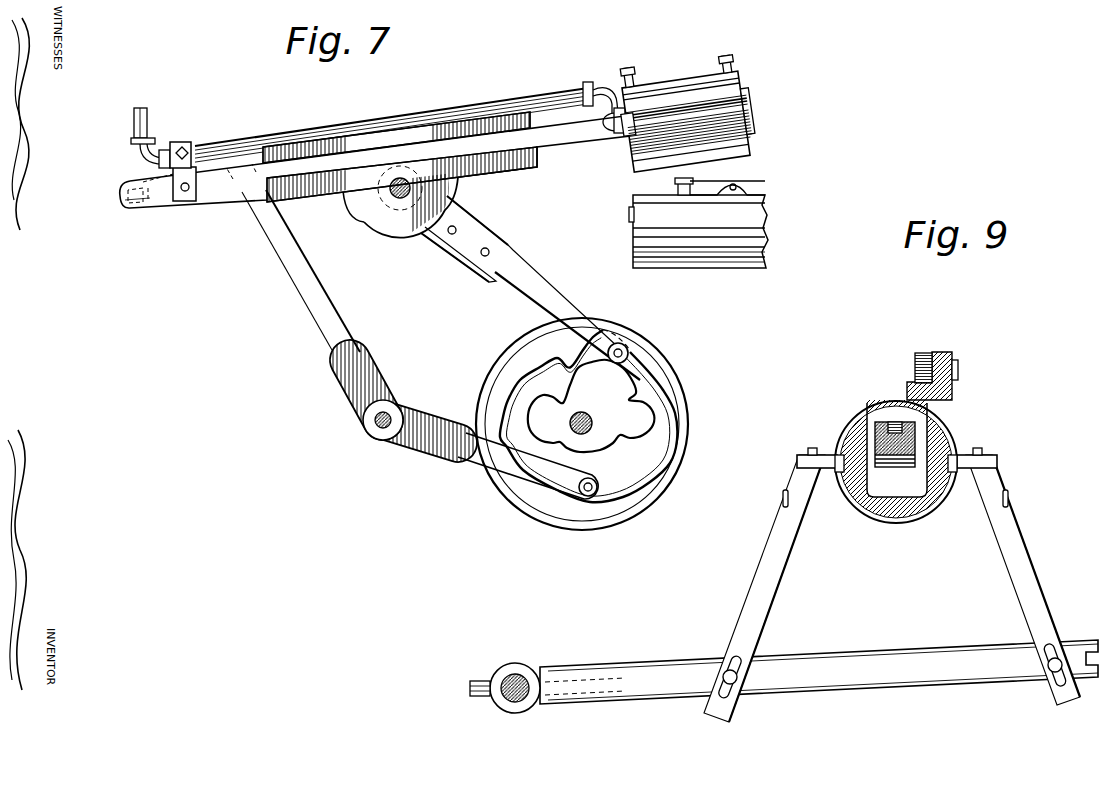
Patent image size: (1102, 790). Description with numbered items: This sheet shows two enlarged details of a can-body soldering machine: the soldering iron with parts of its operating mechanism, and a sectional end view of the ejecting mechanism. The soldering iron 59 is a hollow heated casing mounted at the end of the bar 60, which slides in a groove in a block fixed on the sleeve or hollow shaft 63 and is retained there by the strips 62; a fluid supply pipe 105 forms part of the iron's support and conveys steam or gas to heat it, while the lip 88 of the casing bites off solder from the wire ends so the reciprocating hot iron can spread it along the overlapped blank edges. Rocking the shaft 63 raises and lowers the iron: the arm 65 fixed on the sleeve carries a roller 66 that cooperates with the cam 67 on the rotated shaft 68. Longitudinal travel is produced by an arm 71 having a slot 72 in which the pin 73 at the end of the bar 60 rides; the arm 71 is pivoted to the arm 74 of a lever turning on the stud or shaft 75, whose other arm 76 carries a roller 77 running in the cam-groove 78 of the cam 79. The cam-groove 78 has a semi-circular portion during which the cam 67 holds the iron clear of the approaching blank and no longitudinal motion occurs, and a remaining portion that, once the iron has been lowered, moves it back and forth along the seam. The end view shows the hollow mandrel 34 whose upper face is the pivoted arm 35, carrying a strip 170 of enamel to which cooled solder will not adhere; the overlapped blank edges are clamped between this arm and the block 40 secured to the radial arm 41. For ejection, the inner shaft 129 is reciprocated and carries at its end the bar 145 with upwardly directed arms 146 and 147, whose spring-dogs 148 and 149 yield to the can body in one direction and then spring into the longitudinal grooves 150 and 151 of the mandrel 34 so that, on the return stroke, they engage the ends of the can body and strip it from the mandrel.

In FIG. 9, the mandrel 34 is at (950, 443).
In FIG. 9, the arm 35 is at (915, 430).
In FIG. 9, the strip of enamel 170 is at (893, 422).
In FIG. 7, the block 40 is at (642, 197).
In FIG. 9, the block 40 is at (908, 382).
In FIG. 7, the radial arm 41 is at (765, 185).
In FIG. 9, the radial arm 41 is at (940, 353).
In FIG. 7, the soldering iron 59 is at (742, 93).
In FIG. 7, the lip 88 is at (735, 158).
In FIG. 7, the bar 60 is at (583, 135).
In FIG. 7, the strips 62 is at (373, 142).
In FIG. 7, the sleeve or hollow shaft 63 is at (397, 198).
In FIG. 7, the arm 65 is at (535, 288).
In FIG. 7, the roller 66 is at (624, 348).
In FIG. 7, the cam 67 is at (618, 393).
In FIG. 7, the shaft 68 is at (573, 430).
In FIG. 7, the arm 71 is at (177, 193).
In FIG. 7, the slot 72 is at (146, 194).
In FIG. 7, the pin 73 is at (136, 198).
In FIG. 7, the arm 74 is at (288, 263).
In FIG. 7, the stud or shaft 75 is at (378, 428).
In FIG. 7, the arm 76 is at (473, 460).
In FIG. 7, the roller 77 is at (589, 497).
In FIG. 7, the cam-groove 78 is at (665, 437).
In FIG. 7, the cam 79 is at (613, 447).
In FIG. 7, the fluid supply pipe 105 is at (523, 97).
In FIG. 9, the inner shaft 129 is at (510, 676).
In FIG. 9, the bar 145 is at (880, 663).
In FIG. 9, the arm 146 is at (770, 592).
In FIG. 9, the arm 147 is at (1013, 540).
In FIG. 9, the spring-dog 148 is at (837, 453).
In FIG. 9, the spring-dog 149 is at (957, 453).
In FIG. 9, the longitudinal groove 150 is at (843, 477).
In FIG. 9, the longitudinal groove 151 is at (957, 477).